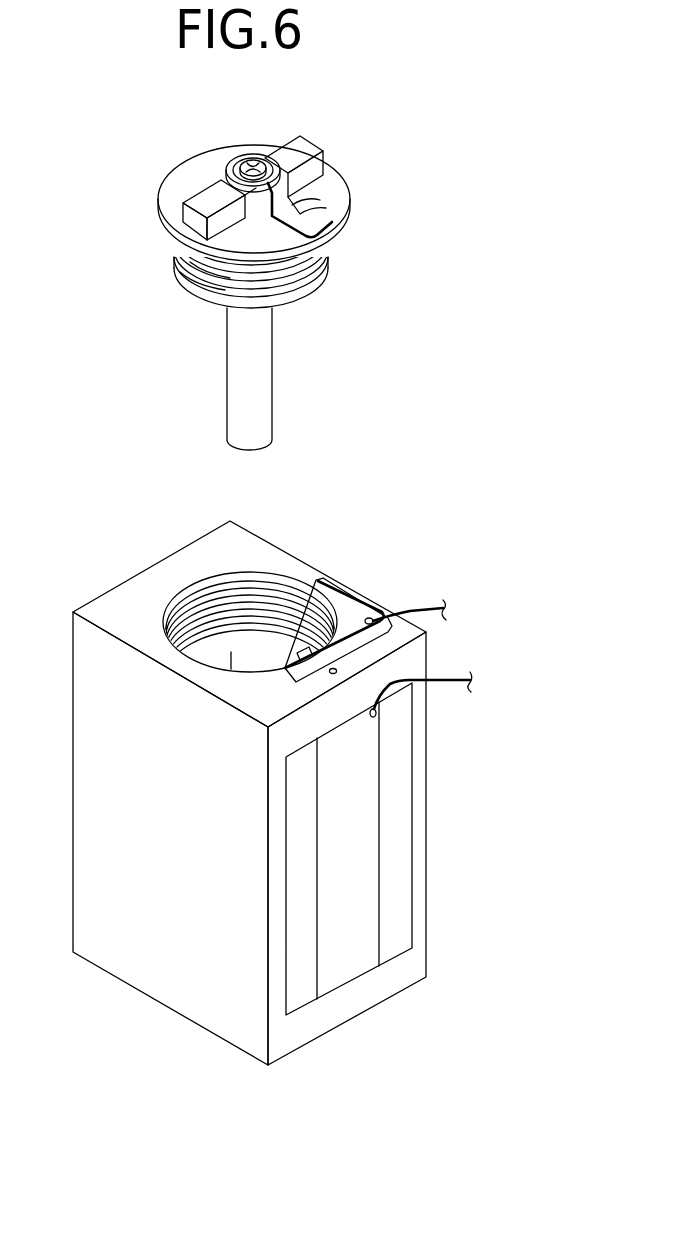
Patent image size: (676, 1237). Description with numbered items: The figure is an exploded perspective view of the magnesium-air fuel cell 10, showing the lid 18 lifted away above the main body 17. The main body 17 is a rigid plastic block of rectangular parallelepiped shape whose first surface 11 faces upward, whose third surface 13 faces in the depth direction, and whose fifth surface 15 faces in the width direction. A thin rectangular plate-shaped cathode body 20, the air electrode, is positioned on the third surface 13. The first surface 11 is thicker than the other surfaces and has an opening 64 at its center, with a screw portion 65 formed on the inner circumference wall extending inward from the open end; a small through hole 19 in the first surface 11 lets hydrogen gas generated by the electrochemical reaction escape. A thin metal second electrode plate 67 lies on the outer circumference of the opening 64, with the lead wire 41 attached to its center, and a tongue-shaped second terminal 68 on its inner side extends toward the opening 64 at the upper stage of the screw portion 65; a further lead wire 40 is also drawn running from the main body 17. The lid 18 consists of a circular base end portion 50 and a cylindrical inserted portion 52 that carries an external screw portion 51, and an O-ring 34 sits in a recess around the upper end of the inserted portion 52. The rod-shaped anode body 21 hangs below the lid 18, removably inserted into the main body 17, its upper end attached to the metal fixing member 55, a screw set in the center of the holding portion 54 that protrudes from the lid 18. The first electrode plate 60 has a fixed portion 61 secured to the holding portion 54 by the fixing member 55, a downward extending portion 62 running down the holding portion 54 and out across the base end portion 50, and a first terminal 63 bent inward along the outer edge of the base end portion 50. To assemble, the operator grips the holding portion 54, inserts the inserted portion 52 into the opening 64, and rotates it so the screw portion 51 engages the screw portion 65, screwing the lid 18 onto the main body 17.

The magnesium-air fuel cell 10 is at (520, 1022).
The first surface 11 is at (152, 585).
The third surface 13 is at (410, 953).
The fifth surface 15 is at (145, 967).
The main body 17 is at (199, 576).
The lid 18 is at (340, 148).
The through hole 19 is at (336, 676).
The cathode body 20 is at (358, 870).
The anode body 21 is at (255, 362).
The O-ring 34 is at (203, 262).
The lead wire 40 is at (437, 671).
The lead wire 41 is at (430, 602).
The base end portion 50 is at (325, 193).
The screw portion 51 is at (290, 277).
The inserted portion 52 is at (202, 282).
The holding portion 54 is at (293, 148).
The fixing member 55 is at (243, 162).
The first electrode plate 60 is at (308, 222).
The fixed portion 61 is at (273, 185).
The downward extending portion 62 is at (295, 214).
The first terminal 63 is at (325, 250).
The opening 64 is at (167, 625).
The screw portion 65 is at (212, 613).
The second electrode plate 67 is at (343, 602).
The second terminal 68 is at (302, 650).